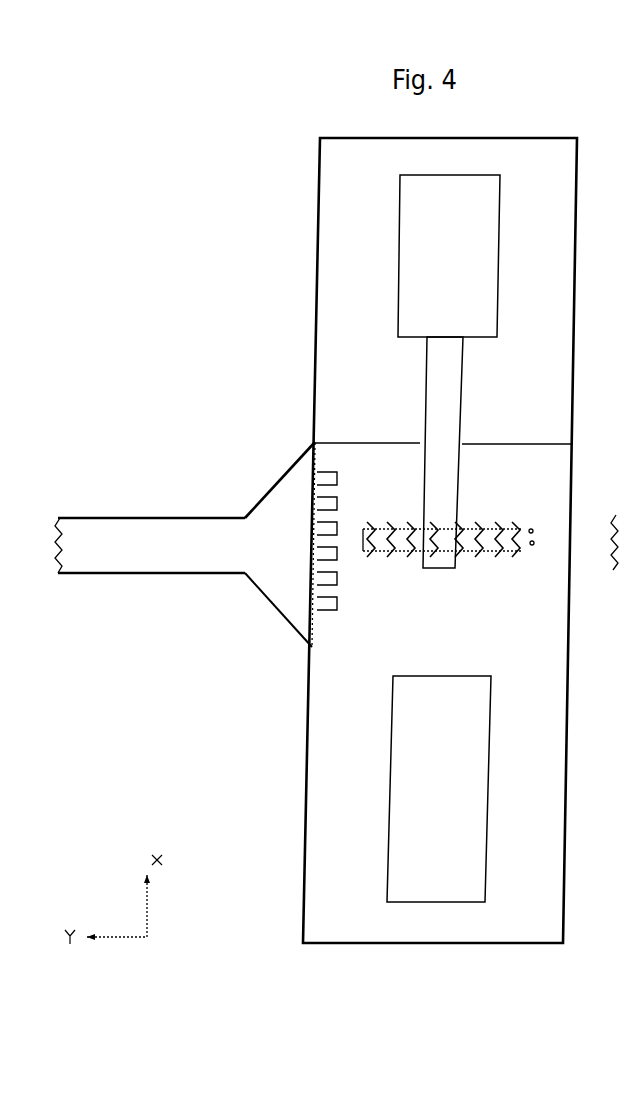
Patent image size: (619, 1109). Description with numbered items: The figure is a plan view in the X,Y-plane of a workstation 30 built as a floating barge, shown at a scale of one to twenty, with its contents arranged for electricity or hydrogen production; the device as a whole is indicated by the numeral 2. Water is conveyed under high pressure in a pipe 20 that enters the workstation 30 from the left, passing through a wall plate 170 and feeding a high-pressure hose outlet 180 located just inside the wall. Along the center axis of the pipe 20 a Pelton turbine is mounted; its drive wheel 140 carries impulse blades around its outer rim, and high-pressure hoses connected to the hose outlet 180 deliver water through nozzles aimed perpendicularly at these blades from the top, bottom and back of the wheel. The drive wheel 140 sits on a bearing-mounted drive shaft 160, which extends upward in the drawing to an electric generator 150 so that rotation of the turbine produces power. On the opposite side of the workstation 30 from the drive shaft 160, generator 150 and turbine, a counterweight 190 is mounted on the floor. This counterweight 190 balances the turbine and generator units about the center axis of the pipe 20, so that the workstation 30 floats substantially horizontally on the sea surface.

The sensor device 2 is at (546, 196).
The workstation 30 is at (274, 260).
The pipe 20 is at (147, 493).
The electric generator 150 is at (495, 278).
The drive shaft 160 is at (428, 421).
The drive wheel 140 is at (488, 563).
The high-pressure hose outlet 180 is at (346, 585).
The wall plate 170 is at (319, 627).
The counterweight 190 is at (506, 684).